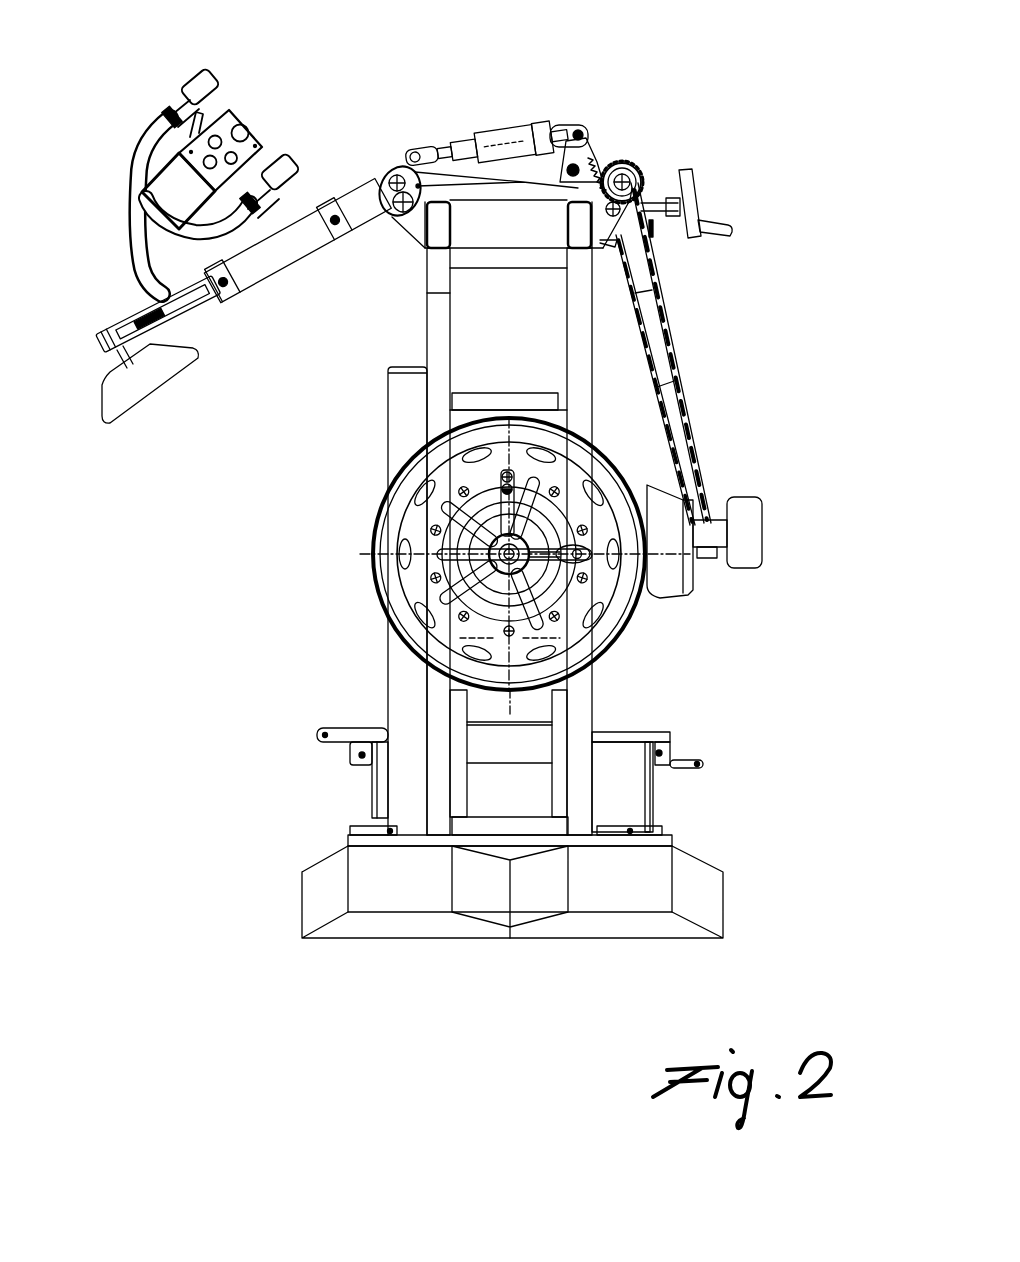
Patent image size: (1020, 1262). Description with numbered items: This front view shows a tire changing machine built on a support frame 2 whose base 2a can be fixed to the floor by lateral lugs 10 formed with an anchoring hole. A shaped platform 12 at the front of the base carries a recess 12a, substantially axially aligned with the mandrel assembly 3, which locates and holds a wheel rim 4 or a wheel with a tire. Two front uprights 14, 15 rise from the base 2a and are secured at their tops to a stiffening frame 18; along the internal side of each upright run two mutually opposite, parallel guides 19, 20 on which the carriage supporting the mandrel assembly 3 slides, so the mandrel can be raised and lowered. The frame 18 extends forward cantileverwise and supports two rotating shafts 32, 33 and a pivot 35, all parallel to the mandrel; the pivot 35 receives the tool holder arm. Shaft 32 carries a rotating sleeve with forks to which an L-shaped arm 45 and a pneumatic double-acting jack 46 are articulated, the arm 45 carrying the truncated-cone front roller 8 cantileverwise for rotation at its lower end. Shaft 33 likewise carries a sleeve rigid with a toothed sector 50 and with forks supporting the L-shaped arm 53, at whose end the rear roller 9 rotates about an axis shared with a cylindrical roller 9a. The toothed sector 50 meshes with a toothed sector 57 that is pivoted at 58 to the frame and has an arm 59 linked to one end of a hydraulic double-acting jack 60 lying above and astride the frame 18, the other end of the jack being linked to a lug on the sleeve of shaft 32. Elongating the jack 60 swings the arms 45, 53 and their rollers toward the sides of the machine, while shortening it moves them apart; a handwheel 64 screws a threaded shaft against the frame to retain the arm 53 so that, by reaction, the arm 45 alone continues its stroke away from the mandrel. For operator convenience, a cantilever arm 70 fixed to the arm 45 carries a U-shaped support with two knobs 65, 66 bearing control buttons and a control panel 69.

The support frame 2 is at (343, 767).
The base 2a is at (652, 812).
The mandrel assembly 3 is at (437, 585).
The wheel rim 4 is at (372, 528).
The front roller 8 is at (153, 372).
The rear roller 9 is at (678, 568).
The cylindrical roller 9a is at (745, 553).
The lateral lugs 10 is at (695, 772).
The shaped platform 12 is at (635, 923).
The recess 12a is at (468, 903).
The front upright 14 is at (442, 805).
The front upright 15 is at (593, 722).
The stiffening frame 18 is at (502, 228).
The guide 19 is at (462, 710).
The guide 20 is at (560, 700).
The rotating shaft 32 is at (388, 167).
The rotating shaft 33 is at (692, 178).
The pivot 35 is at (615, 220).
The L-shaped arm 45 is at (190, 313).
The pneumatic double-acting jack 46 is at (302, 250).
The toothed sector 50 is at (630, 167).
The L-shaped arm 53 is at (672, 333).
The toothed sector 57 is at (592, 160).
The pivot 58 is at (585, 168).
The arm 59 is at (571, 120).
The hydraulic double-acting jack 60 is at (495, 133).
The handwheel 64 is at (700, 220).
The knob 65 is at (177, 105).
The knob 66 is at (272, 192).
The control panel 69 is at (253, 133).
The cantilever arm 70 is at (132, 233).